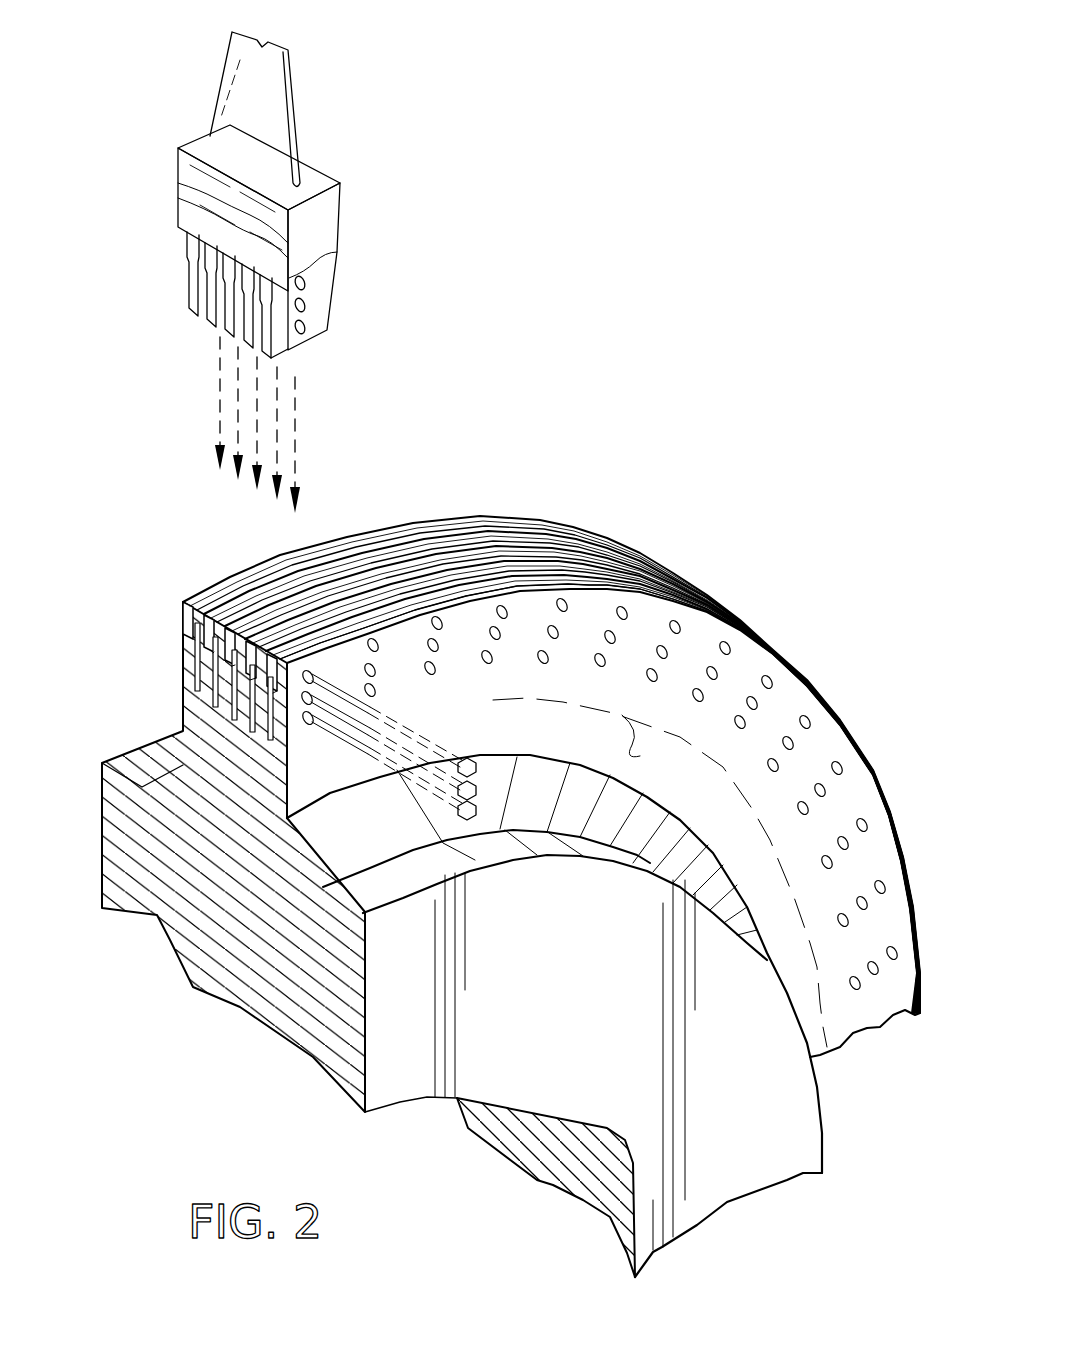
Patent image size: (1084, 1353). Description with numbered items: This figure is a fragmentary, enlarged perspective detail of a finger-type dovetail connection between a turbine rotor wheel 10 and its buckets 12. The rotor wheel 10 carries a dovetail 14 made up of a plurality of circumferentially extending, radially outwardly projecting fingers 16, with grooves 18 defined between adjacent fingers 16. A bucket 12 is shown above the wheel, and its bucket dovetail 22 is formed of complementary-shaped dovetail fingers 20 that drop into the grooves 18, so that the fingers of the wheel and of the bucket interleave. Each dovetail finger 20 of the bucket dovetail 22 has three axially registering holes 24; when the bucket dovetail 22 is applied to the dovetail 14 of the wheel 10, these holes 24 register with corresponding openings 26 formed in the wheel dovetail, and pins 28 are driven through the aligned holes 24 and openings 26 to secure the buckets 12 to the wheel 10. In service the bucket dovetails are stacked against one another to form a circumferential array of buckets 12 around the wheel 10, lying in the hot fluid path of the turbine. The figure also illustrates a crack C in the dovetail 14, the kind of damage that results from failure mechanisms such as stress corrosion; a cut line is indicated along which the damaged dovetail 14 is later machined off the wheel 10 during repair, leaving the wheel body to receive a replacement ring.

The rotor wheel 10 is at (125, 757).
The bucket 12 is at (245, 96).
The dovetail 14 is at (185, 644).
The finger 16 is at (240, 585).
The groove 18 is at (265, 595).
The dovetail finger 20 is at (320, 286).
The bucket dovetail 22 is at (178, 201).
The hole 24 is at (308, 327).
The opening 26 is at (378, 665).
The pin 28 is at (362, 768).
The crack C is at (258, 712).